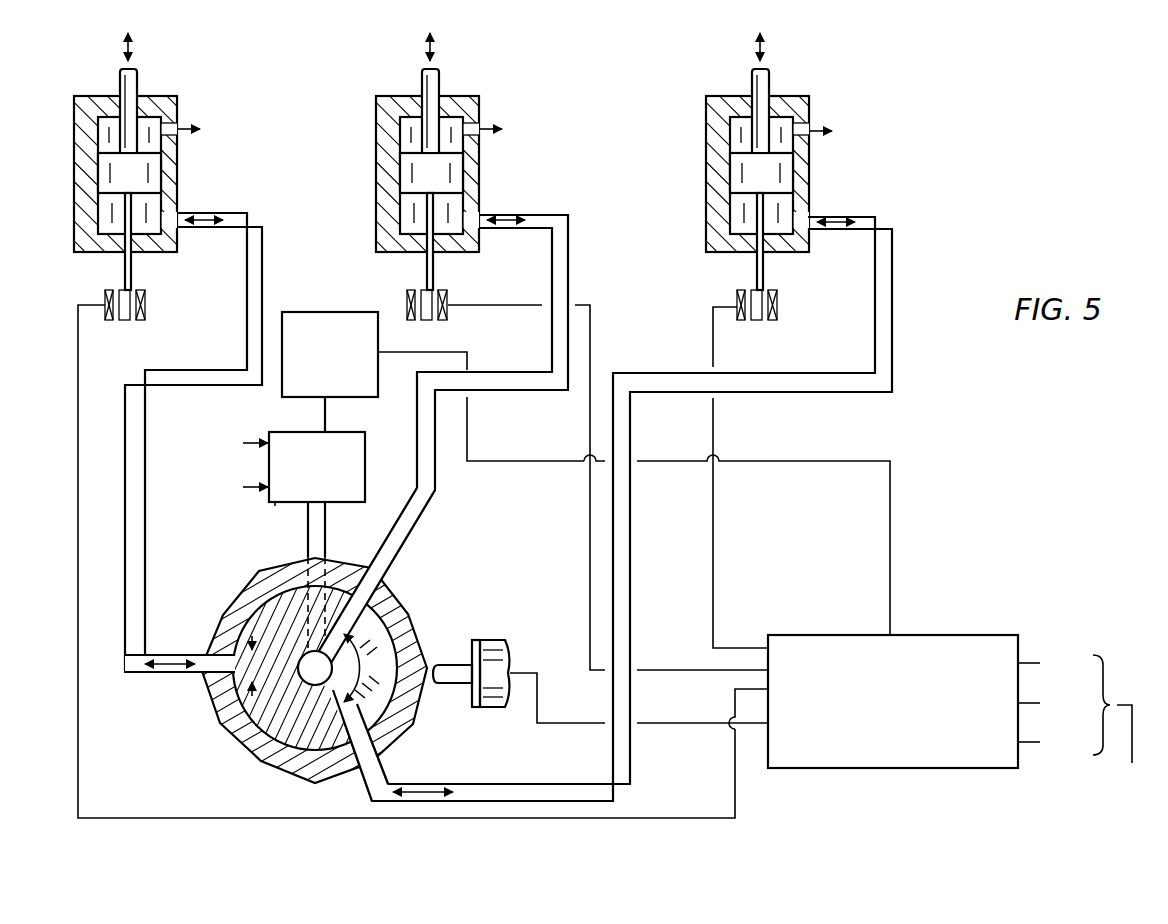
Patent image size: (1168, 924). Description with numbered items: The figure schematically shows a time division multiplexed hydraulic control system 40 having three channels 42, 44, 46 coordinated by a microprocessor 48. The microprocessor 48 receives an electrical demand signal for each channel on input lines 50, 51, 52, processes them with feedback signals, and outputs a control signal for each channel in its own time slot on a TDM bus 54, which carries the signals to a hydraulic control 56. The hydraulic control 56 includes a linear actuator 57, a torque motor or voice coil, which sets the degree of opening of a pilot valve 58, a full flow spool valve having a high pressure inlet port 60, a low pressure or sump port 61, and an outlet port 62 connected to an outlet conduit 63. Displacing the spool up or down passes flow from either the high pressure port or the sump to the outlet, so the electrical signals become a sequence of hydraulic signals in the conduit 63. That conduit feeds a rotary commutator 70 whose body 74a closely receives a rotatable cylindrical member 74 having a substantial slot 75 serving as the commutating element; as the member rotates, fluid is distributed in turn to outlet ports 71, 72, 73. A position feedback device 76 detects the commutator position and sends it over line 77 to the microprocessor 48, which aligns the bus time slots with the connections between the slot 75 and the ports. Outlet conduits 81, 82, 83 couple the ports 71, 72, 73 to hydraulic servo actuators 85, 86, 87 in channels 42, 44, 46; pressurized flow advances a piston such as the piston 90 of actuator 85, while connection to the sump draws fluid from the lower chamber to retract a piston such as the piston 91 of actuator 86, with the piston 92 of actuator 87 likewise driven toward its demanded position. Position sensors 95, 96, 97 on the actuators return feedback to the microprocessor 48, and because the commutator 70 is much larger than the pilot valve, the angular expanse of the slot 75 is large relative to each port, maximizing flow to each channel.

The time division multiplexed hydraulic control system 40 is at (515, 441).
The channel 42 is at (82, 343).
The channel 44 is at (427, 185).
The channel 46 is at (757, 185).
The microprocessor 48 is at (978, 635).
The input line 50 is at (1040, 663).
The input line 51 is at (1040, 703).
The input line 52 is at (1040, 742).
The TDM bus 54 is at (893, 478).
The hydraulic control 56 is at (195, 502).
The linear actuator 57 is at (311, 311).
The pilot valve 58 is at (274, 503).
The high pressure inlet port 60 is at (270, 432).
The low pressure or sump port 61 is at (265, 485).
The outlet port 62 is at (317, 505).
The outlet conduit 63 is at (330, 541).
The rotary commutator 70 is at (446, 669).
The outlet port 71 is at (208, 665).
The outlet port 72 is at (378, 570).
The outlet port 73 is at (365, 772).
The rotatable cylindrical member 74 is at (257, 720).
The body 74a is at (237, 593).
The slot 75 is at (390, 680).
The position feedback device 76 is at (492, 640).
The line 77 is at (577, 728).
The outlet conduit 81 is at (124, 497).
The outlet conduit 82 is at (436, 491).
The outlet conduit 83 is at (632, 522).
The hydraulic servo actuator 85 is at (47, 187).
The hydraulic servo actuator 86 is at (427, 185).
The hydraulic servo actuator 87 is at (757, 185).
The piston 90 is at (171, 161).
The piston 91 is at (473, 161).
The piston 92 is at (802, 161).
The position sensor 95 is at (157, 294).
The position sensor 96 is at (451, 290).
The position sensor 97 is at (762, 326).